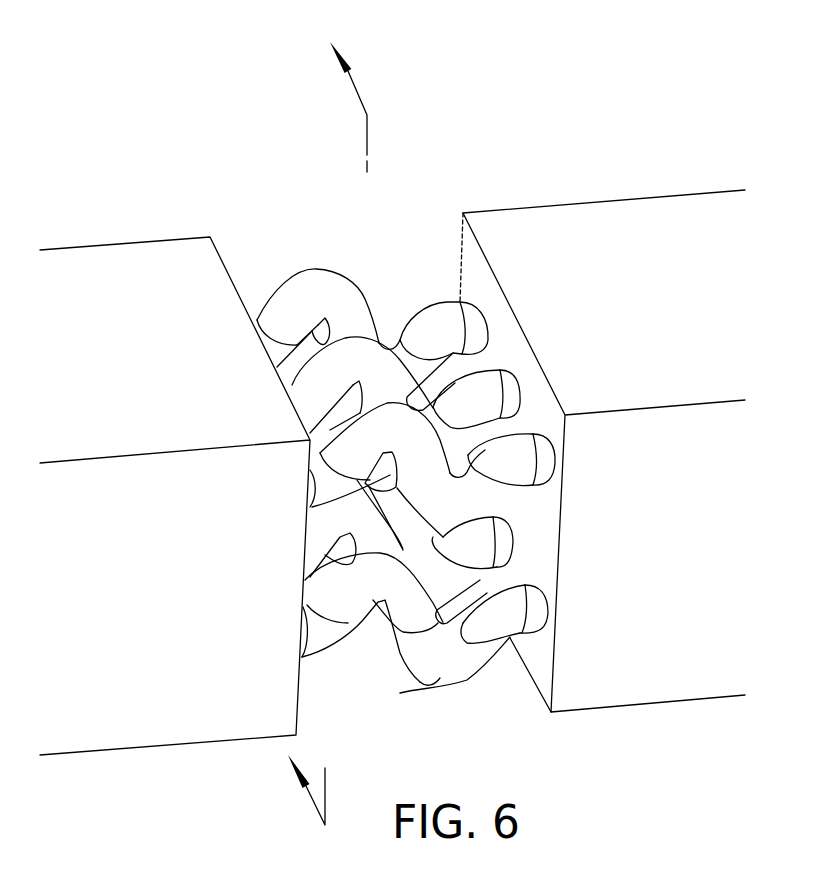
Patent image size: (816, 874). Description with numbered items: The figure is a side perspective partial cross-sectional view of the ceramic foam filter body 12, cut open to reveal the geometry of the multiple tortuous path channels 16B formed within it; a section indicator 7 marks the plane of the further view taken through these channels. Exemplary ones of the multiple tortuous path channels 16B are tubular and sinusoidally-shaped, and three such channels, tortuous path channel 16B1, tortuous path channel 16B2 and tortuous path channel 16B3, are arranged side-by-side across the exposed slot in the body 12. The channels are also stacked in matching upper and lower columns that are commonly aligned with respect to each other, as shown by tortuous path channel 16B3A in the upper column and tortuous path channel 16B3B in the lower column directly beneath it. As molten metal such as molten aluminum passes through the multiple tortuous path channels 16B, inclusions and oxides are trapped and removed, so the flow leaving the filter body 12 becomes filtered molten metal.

The section line 7- 7 is at (312, 414).
The body / substrate 12 is at (578, 168).
The multiple tortuous path channels 16B is at (463, 193).
The tortuous path channel 16B1 is at (318, 284).
The tortuous path channel 16B2 is at (348, 352).
The tortuous path channel 16B3 is at (377, 422).
The tortuous path channel 16B3A is at (455, 517).
The tortuous path channel 16B3B is at (437, 667).